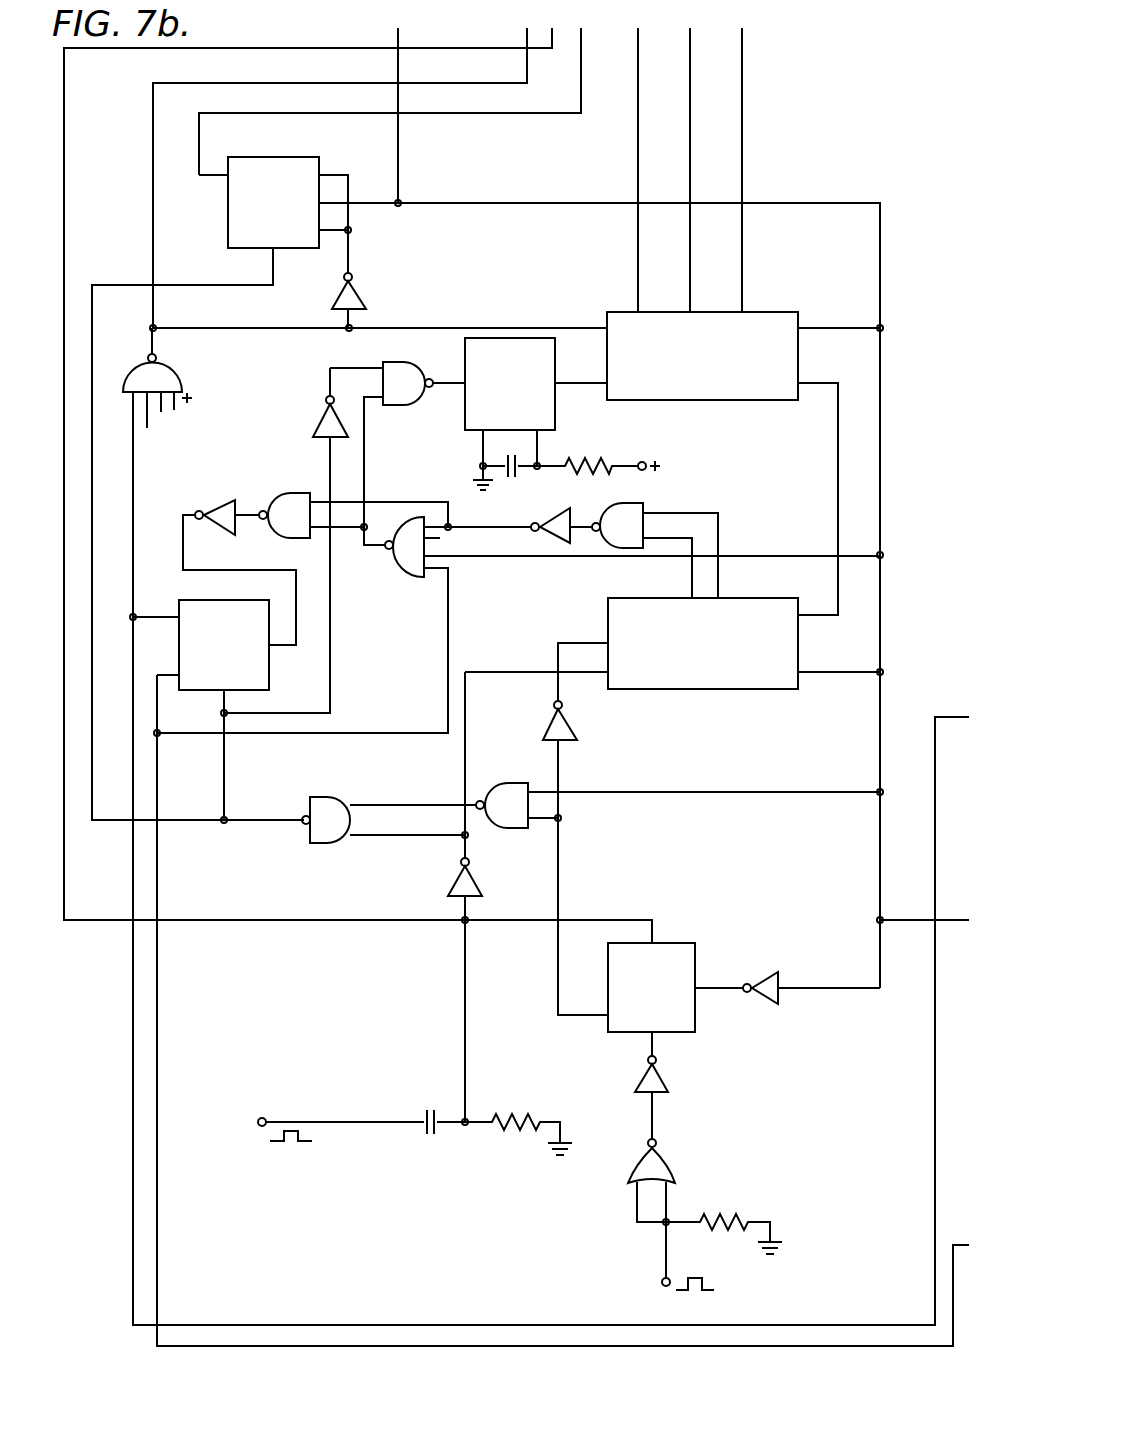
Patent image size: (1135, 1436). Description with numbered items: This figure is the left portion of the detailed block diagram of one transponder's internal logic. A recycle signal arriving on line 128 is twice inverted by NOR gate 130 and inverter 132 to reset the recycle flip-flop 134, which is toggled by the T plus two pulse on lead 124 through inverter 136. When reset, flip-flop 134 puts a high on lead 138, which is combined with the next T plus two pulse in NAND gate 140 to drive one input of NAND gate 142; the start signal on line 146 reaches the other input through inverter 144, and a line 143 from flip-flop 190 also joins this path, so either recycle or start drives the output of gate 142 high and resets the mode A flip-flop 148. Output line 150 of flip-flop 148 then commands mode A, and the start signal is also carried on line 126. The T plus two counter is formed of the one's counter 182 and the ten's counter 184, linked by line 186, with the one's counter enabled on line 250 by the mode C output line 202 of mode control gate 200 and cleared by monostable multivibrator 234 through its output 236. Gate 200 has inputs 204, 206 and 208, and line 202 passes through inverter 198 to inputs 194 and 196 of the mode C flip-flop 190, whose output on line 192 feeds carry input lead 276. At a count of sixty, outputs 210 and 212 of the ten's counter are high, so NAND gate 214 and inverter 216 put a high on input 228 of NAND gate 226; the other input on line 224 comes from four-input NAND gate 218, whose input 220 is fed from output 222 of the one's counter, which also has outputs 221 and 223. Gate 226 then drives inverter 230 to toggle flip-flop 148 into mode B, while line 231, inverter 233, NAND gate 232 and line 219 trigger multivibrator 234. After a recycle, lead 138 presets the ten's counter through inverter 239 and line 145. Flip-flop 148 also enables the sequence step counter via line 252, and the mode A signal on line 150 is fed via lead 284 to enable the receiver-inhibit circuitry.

The output lead 124 is at (396, 38).
The start signal line 126 is at (520, 50).
The recycle signal line 128 is at (664, 1264).
The NOR gate 130 is at (684, 1180).
The inverter 132 is at (666, 1086).
The recycle flip-flop 134 is at (682, 948).
The inverter 136 is at (764, 1014).
The output lead 138 is at (560, 878).
The NAND gate 140 is at (522, 784).
The NAND gate 142 is at (338, 798).
The signal line 143 is at (220, 284).
The inverter 144 is at (446, 886).
The tens counter input line 145 is at (556, 650).
The start signal line 146 is at (396, 1120).
The mode A flip-flop 148 is at (228, 602).
The output line 150 is at (158, 706).
The one's counter 182 is at (776, 312).
The ten's counter 184 is at (718, 690).
The line 186 is at (836, 462).
The mode C flip-flop 190 is at (276, 158).
The output line 192 is at (218, 184).
The input 194 is at (336, 174).
The input 196 is at (338, 236).
The inverter 198 is at (364, 294).
The mode control gate 200 is at (178, 378).
The mode C output line 202 is at (524, 70).
The input 204 is at (176, 600).
The input 206 is at (147, 428).
The input 208 is at (161, 412).
The output 210 is at (690, 578).
The output 212 is at (722, 582).
The NAND gate 214 is at (630, 506).
The inverter 216 is at (546, 512).
The four input NAND gate 218 is at (412, 580).
The line 219 is at (366, 462).
The input 220 is at (440, 538).
The output line 221 is at (638, 60).
The output line 222 is at (742, 60).
The output line 223 is at (690, 60).
The line 224 is at (392, 562).
The NAND gate 226 is at (296, 538).
The input 228 is at (384, 502).
The inverter 230 is at (220, 502).
The line 231 is at (226, 776).
The NAND gate 232 is at (390, 364).
The inverter 233 is at (326, 422).
The monostable multivibrator 234 is at (462, 426).
The one-shot output line 236 is at (576, 386).
The inverter 239 is at (578, 730).
The enabling input line 250 is at (474, 328).
The line 252 is at (132, 1036).
The carry input lead 276 is at (582, 64).
The lead 284 is at (158, 1002).